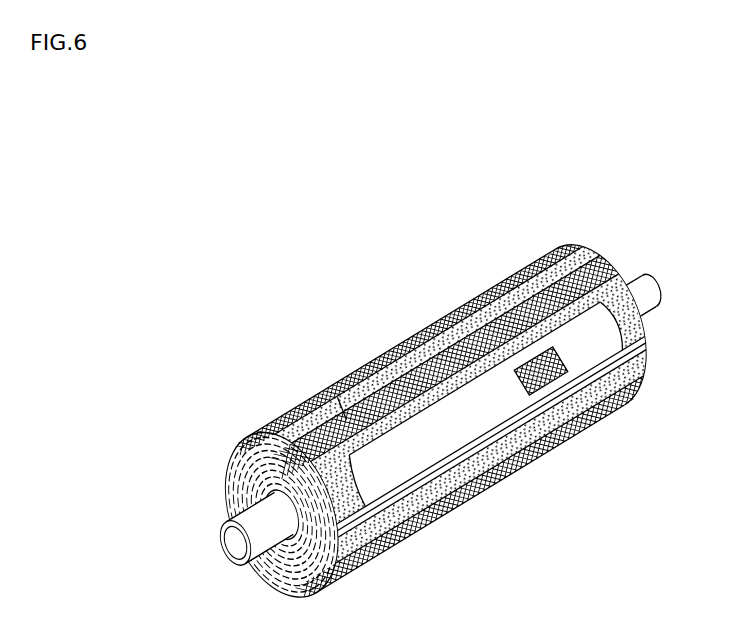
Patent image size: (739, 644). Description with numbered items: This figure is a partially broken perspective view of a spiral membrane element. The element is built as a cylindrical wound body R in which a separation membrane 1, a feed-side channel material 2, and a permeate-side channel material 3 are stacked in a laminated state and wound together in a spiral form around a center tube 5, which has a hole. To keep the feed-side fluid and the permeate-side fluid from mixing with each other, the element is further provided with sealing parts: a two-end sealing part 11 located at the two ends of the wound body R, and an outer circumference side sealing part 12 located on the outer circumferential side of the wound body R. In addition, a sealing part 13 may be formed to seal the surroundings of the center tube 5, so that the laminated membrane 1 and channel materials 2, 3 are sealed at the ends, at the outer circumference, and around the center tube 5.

The cylindrical wound body R is at (248, 433).
The separation membrane 1 is at (358, 370).
The feed-side channel material 2 is at (322, 396).
The permeate-side channel material 3 is at (560, 380).
The center tube 5 is at (257, 541).
The two-end sealing part 11 is at (641, 323).
The outer circumference side sealing part 12 is at (444, 319).
The sealing part 13 is at (253, 503).